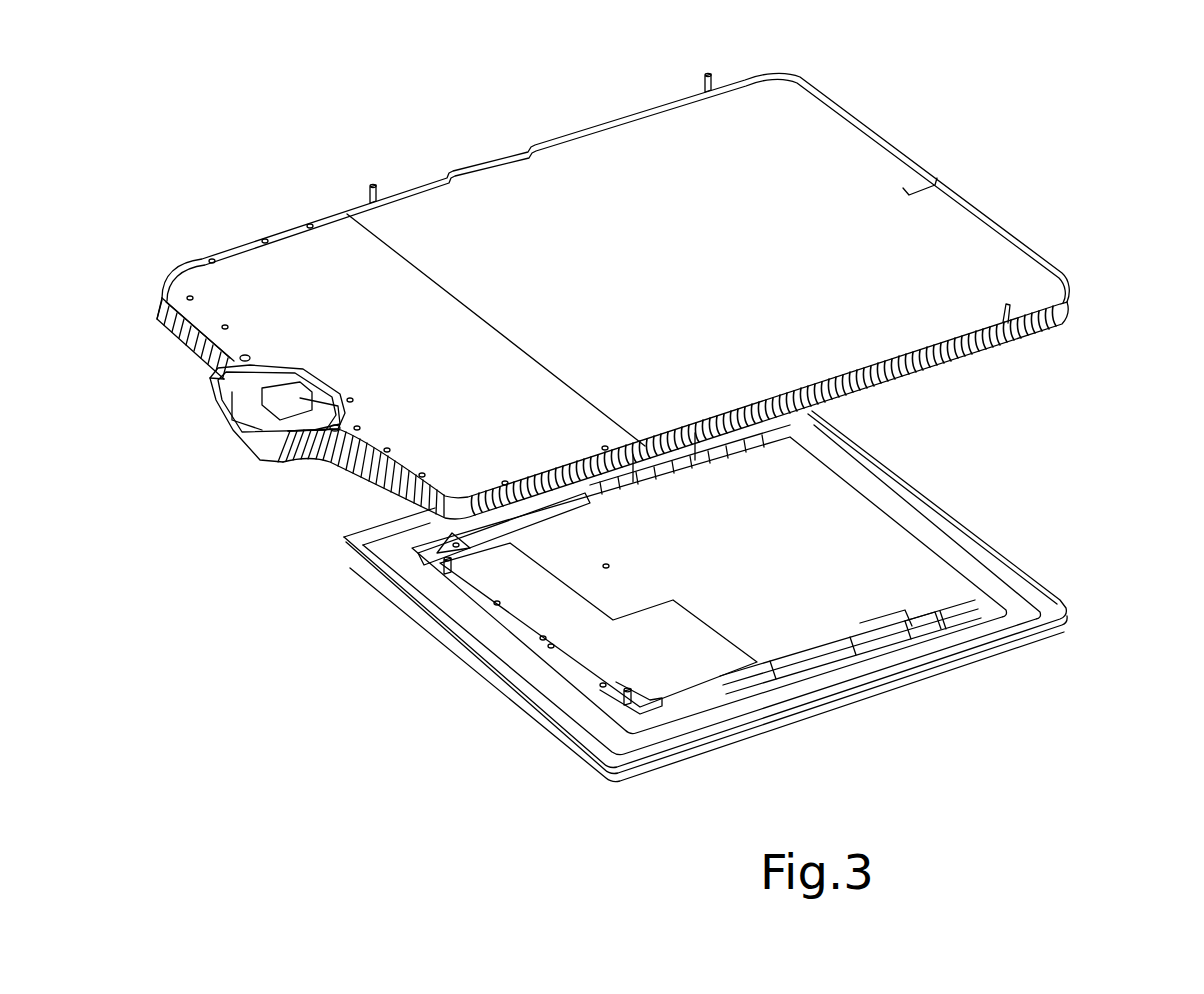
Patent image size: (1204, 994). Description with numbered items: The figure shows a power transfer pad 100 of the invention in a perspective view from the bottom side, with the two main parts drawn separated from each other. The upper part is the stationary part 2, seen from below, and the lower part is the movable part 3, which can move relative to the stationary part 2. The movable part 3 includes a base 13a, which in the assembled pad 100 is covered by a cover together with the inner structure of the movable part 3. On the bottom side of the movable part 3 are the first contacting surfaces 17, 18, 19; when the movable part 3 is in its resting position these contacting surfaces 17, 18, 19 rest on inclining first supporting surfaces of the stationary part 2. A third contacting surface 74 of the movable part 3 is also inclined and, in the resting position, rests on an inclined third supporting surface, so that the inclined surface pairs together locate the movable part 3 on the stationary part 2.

The pad 100 is at (1076, 121).
The stationary part 2 is at (865, 121).
The movable part 3 is at (830, 707).
The base 13a is at (673, 672).
The first contacting surface 17 is at (890, 660).
The first contacting surface 18 is at (952, 538).
The first contacting surface 19 is at (392, 530).
The third contacting surface 74 is at (523, 688).